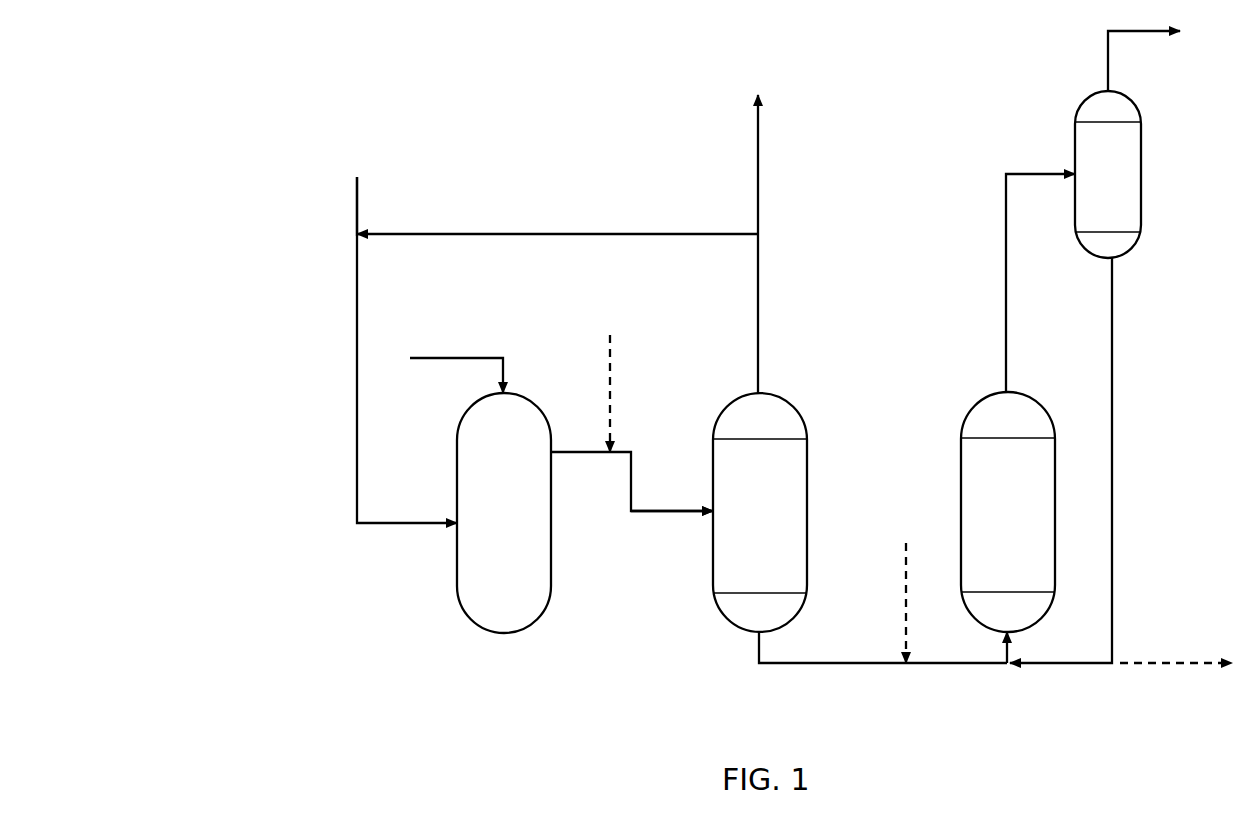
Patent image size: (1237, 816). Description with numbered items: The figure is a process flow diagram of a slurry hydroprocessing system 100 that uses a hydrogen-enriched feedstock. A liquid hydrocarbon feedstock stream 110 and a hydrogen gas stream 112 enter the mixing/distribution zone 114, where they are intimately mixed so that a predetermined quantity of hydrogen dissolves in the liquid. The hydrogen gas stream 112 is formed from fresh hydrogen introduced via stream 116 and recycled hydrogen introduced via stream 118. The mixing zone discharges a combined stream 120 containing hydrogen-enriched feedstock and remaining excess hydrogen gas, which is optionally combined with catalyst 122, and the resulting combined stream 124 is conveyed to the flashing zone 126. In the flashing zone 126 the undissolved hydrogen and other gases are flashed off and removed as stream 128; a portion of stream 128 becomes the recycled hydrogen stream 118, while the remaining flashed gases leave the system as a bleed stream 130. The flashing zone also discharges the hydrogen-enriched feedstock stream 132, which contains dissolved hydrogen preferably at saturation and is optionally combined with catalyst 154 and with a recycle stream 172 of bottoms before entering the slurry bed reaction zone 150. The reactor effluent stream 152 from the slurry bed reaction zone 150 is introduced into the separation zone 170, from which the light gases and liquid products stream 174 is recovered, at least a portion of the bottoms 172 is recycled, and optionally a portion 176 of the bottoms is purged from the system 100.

The system 100 is at (242, 100).
The liquid hydrocarbon feedstock stream 110 is at (438, 358).
The hydrogen gas stream 112 is at (357, 438).
The mixing/distribution zone 114 is at (504, 513).
The fresh hydrogen stream 116 is at (357, 206).
The recycled hydrogen stream 118 is at (531, 234).
The combined stream 120 is at (592, 452).
The catalyst 122 is at (608, 352).
The combined stream 124 is at (686, 511).
The flashing zone 126 is at (760, 512).
The gas outlet stream 128 is at (758, 308).
The bleed stream 130 is at (758, 207).
The hydrogen-enriched feedstock stream 132 is at (758, 652).
The slurry bed reaction zone 150 is at (1008, 527).
The reactor effluent stream 152 is at (1005, 262).
The catalyst 154 is at (905, 560).
The separation zone 170 is at (1108, 174).
The bottoms recycle stream 172 is at (1110, 372).
The light gases and liquid products stream 174 is at (1106, 74).
The purge stream 176 is at (1200, 663).